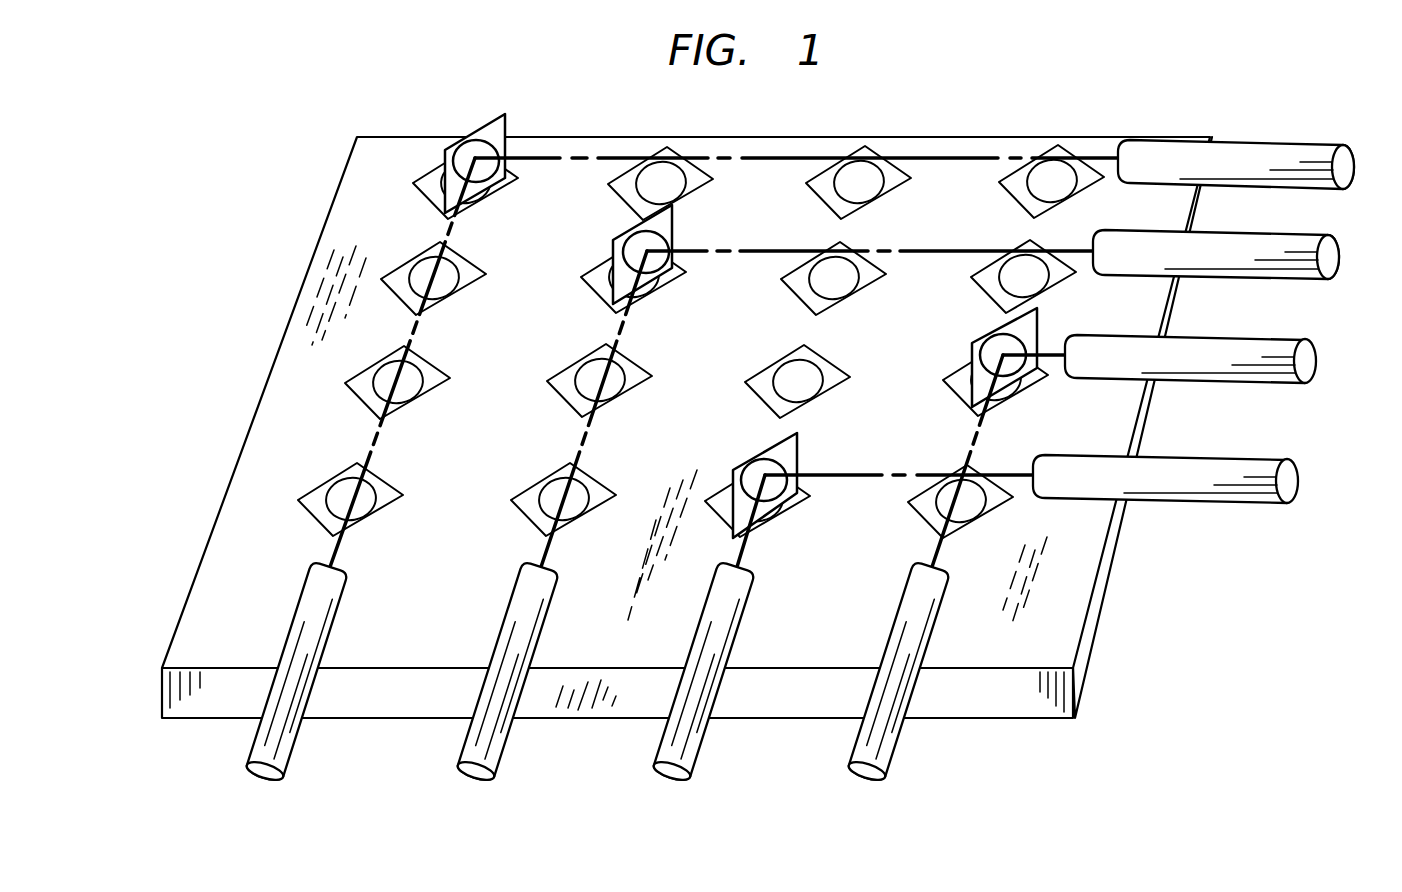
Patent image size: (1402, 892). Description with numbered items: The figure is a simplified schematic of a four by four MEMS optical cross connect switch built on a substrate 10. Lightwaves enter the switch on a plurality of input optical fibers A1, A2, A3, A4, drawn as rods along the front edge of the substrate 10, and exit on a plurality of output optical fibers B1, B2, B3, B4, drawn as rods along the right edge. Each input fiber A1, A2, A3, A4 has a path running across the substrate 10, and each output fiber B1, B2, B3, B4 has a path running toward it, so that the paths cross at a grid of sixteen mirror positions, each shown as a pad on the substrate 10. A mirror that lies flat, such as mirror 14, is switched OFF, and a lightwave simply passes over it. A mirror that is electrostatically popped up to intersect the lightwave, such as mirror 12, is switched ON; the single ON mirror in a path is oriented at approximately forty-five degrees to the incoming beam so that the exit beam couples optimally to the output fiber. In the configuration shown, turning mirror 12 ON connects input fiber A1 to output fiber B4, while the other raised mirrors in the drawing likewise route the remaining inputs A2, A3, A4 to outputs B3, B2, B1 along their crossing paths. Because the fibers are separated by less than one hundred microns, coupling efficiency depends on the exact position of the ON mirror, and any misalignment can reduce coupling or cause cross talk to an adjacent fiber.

The substrate 10 is at (981, 700).
The mirror 12 is at (376, 201).
The mirror 14 is at (262, 529).
The input optical fiber A1 is at (345, 470).
The input optical fiber A2 is at (536, 517).
The input optical fiber A3 is at (695, 629).
The input optical fiber A4 is at (911, 569).
The output optical fiber B1 is at (1031, 464).
The output optical fiber B2 is at (1159, 344).
The output optical fiber B3 is at (993, 239).
The output optical fiber B4 is at (914, 151).